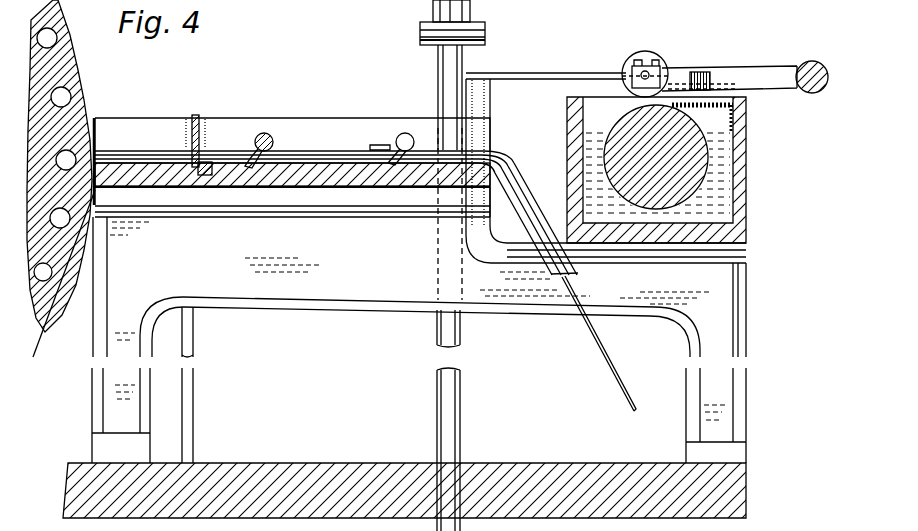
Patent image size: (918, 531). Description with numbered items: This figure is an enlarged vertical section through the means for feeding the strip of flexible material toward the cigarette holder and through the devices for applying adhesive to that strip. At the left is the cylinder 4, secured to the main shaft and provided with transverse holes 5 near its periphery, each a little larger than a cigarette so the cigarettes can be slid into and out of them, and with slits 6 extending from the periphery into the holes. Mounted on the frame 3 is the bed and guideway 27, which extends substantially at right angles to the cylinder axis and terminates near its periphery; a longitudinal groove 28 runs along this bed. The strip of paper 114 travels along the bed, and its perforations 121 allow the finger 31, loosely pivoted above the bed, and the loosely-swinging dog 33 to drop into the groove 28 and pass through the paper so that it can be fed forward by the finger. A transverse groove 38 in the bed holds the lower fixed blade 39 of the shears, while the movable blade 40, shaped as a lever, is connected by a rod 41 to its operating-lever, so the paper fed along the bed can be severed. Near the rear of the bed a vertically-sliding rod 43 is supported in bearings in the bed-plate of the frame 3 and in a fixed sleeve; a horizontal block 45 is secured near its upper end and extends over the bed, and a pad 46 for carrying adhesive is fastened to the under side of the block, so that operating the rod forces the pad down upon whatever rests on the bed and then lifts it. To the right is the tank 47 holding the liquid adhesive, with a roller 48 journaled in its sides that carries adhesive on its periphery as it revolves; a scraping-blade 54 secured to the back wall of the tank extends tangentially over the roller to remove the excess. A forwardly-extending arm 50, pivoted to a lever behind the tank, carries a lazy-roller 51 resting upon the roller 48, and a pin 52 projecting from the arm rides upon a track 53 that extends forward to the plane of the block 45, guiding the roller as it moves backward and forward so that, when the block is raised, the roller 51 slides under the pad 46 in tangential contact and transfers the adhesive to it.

The frame 3 is at (372, 459).
The cylinder 4 is at (72, 47).
The transverse holes 5 is at (69, 92).
The slits 6 is at (71, 97).
The bed and guideway 27 is at (303, 192).
The longitudinal groove 28 is at (296, 165).
The finger 31 is at (257, 136).
The loosely-swinging dog 33 is at (389, 150).
The transverse groove 38 is at (194, 176).
The lower fixed blade 39 is at (204, 177).
The movable blade 40 is at (198, 117).
The rod 41 is at (195, 343).
The vertically-sliding rod 43 is at (463, 63).
The horizontal block 45 is at (487, 32).
The pad 46 is at (422, 39).
The tank 47 is at (748, 176).
The roller 48 is at (632, 148).
The forwardly-extending arm 50 is at (755, 73).
The lazy-roller 51 is at (652, 48).
The pin 52 is at (701, 69).
The track 53 is at (606, 156).
The scraping-blade 54 is at (708, 110).
The strip of paper 114 is at (341, 192).
The perforations 121 is at (396, 192).